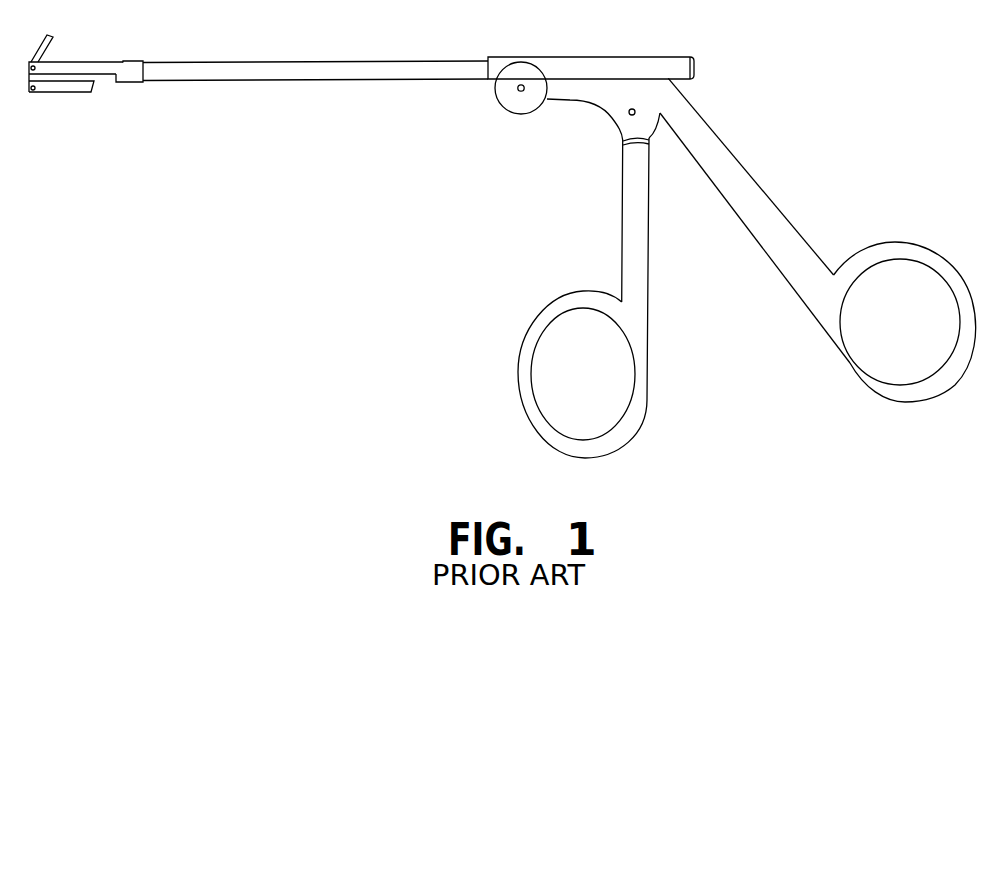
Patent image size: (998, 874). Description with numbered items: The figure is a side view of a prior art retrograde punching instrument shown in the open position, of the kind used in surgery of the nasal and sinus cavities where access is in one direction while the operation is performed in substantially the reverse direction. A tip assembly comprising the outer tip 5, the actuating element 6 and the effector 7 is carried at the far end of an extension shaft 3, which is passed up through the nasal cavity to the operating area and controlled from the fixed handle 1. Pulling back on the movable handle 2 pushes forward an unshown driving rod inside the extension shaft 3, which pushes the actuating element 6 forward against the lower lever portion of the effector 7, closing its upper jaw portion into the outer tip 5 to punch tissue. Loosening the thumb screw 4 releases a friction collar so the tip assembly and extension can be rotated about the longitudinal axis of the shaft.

The fixed handle 1 is at (662, 92).
The movable handle 2 is at (632, 222).
The extension shaft 3 is at (290, 70).
The thumb screw 4 is at (512, 105).
The outer tip 5 is at (130, 72).
The actuating element 6 is at (57, 88).
The effector 7 is at (47, 42).